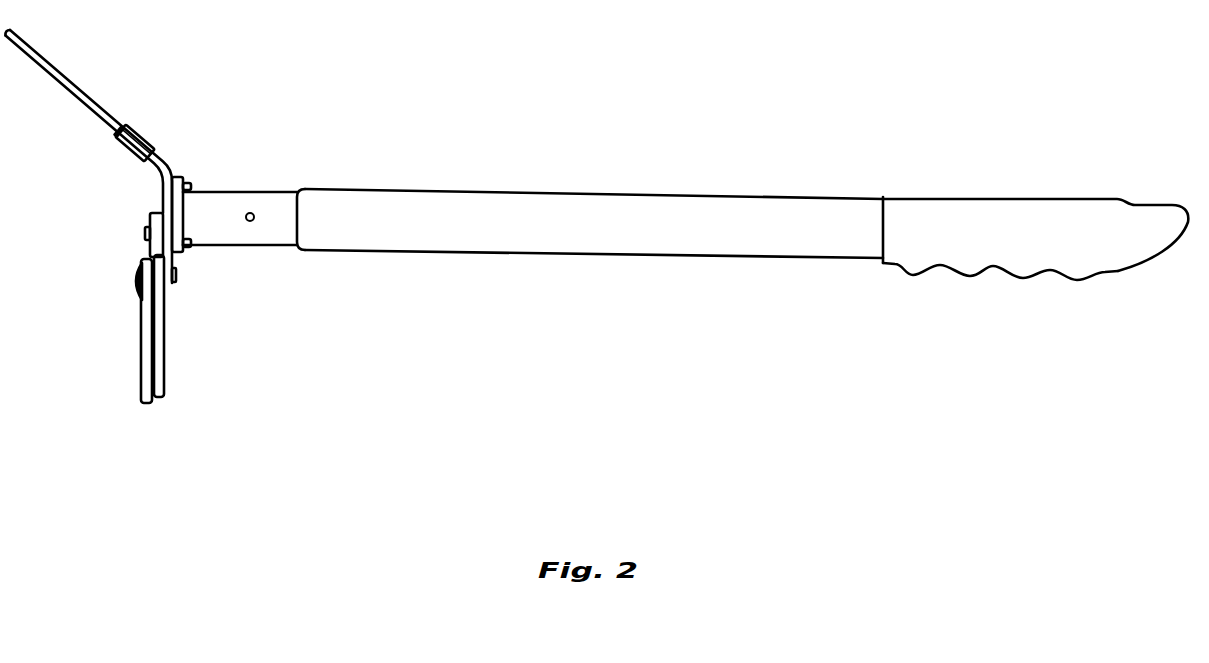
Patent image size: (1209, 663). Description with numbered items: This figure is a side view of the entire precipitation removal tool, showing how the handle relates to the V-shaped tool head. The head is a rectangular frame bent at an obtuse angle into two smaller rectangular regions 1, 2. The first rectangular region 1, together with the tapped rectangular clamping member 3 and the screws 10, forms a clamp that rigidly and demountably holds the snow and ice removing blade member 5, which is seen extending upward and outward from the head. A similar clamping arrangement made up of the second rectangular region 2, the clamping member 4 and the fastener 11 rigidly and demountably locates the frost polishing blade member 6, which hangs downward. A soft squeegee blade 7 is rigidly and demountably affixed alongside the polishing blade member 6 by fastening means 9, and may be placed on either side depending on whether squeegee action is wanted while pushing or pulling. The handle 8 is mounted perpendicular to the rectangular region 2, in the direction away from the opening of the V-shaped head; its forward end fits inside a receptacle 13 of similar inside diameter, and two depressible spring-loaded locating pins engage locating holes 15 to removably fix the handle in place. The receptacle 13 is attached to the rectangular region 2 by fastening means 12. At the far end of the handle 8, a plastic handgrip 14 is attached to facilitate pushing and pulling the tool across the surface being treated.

The first rectangular region 1 is at (142, 135).
The second rectangular region 2 is at (167, 173).
The tapped rectangular clamping member 3 is at (122, 145).
The clamping member 4 is at (150, 253).
The snow and ice removing blade member 5 is at (78, 103).
The frost polishing blade member 6 is at (168, 363).
The squeegee blade 7 is at (142, 337).
The handle 8 is at (405, 207).
The fastening means 9 is at (172, 283).
The screws 10 is at (130, 160).
The clamping fastener 11 is at (146, 234).
The fastening means 12 is at (190, 185).
The receptacle 13 is at (242, 233).
The plastic handgrip 14 is at (958, 210).
The locating holes 15 is at (253, 212).